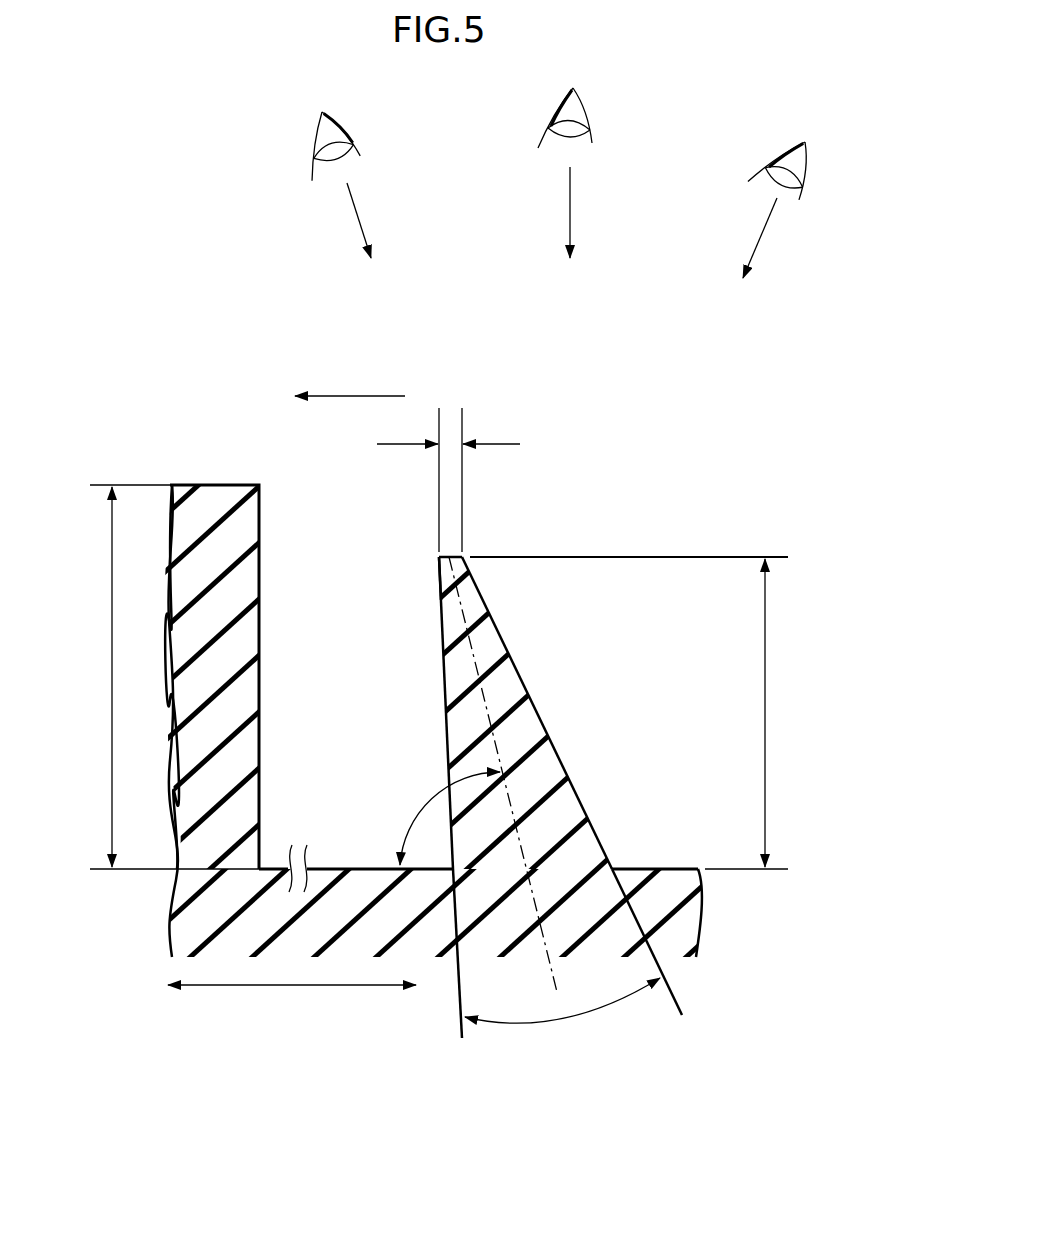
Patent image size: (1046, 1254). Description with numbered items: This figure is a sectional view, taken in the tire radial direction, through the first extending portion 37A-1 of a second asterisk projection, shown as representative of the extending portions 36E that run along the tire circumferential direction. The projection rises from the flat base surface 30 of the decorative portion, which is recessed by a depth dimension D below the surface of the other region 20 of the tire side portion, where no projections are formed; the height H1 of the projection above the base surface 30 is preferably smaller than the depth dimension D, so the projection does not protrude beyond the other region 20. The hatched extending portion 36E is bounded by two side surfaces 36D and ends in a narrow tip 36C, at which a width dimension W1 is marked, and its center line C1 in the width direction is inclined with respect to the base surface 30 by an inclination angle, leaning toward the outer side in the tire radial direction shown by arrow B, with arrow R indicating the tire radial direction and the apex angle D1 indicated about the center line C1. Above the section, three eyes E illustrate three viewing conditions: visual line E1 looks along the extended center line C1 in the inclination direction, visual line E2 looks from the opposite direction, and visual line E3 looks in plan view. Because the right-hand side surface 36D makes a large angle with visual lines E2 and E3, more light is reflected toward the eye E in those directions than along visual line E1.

The other region 20 is at (218, 485).
The base surface 30 is at (336, 866).
The top surface of protrusion 36C is at (450, 556).
The side surfaces 36D is at (455, 678).
The extending portion 36E is at (418, 550).
The first extending portion 37A-1 is at (583, 790).
The eye E is at (318, 147).
The visual line E1 is at (360, 212).
The visual line E2 is at (760, 240).
The visual line E3 is at (572, 200).
The arrow B is at (358, 396).
The width of top surface W1 is at (447, 444).
The depth dimension D is at (106, 683).
The height H1 is at (768, 712).
The arrow R is at (297, 987).
The center line C1 is at (540, 965).
The apex angle D1 is at (560, 1018).